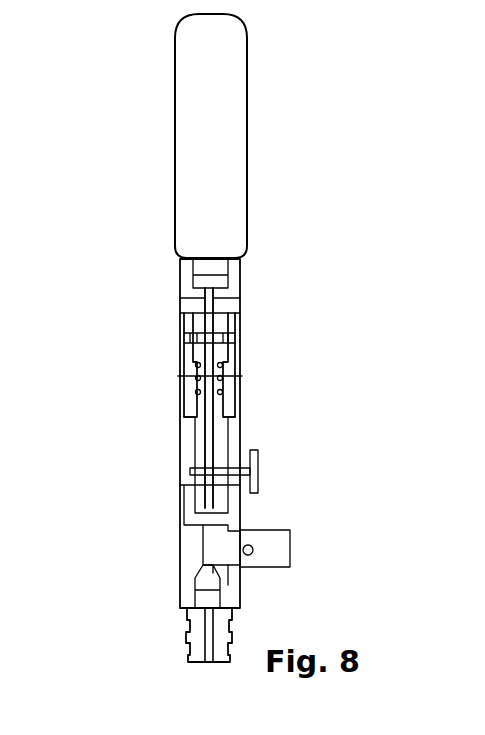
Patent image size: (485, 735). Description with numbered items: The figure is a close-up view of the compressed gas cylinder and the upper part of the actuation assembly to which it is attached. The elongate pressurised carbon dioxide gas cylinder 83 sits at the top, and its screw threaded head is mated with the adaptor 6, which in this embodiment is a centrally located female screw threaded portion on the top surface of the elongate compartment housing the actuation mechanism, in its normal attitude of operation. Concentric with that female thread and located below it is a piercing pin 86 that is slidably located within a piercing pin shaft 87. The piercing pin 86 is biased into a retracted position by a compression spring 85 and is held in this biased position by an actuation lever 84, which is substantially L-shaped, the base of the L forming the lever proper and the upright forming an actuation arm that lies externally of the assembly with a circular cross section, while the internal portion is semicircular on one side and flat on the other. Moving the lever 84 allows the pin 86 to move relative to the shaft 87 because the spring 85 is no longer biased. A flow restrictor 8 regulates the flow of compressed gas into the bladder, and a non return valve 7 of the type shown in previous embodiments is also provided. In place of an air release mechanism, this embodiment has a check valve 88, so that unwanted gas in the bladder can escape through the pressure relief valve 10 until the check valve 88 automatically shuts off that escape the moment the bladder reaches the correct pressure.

The pressurised carbon dioxide gas cylinder 83 is at (223, 162).
The adaptor 6 is at (178, 273).
The piercing pin 86 is at (183, 313).
The compression spring 85 is at (183, 376).
The piercing pin shaft 87 is at (241, 377).
The flow restrictor 8 is at (210, 443).
The actuation lever 84 is at (258, 478).
The pressure relief valve 10 is at (283, 553).
The non return valve 7 is at (224, 588).
The check valve 88 is at (182, 612).